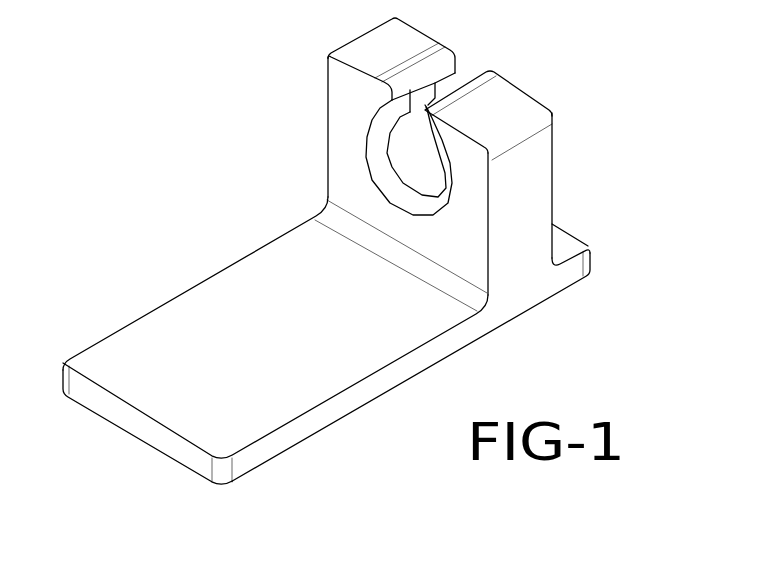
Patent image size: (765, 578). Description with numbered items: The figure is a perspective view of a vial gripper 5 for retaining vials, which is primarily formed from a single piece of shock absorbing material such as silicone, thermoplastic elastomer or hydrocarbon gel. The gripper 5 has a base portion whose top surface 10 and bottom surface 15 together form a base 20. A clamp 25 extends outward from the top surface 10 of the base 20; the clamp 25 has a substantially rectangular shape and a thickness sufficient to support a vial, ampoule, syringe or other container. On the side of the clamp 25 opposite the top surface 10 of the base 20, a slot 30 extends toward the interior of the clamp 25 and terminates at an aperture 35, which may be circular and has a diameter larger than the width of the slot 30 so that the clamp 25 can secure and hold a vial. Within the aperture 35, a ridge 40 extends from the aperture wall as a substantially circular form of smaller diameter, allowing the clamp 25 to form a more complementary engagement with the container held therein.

The vial gripper 5 is at (130, 140).
The top surface 10 is at (206, 382).
The bottom surface 15 is at (158, 446).
The base 20 is at (293, 430).
The clamp 25 is at (532, 178).
The slot 30 is at (474, 62).
The aperture 35 is at (392, 188).
The ridge 40 is at (408, 140).